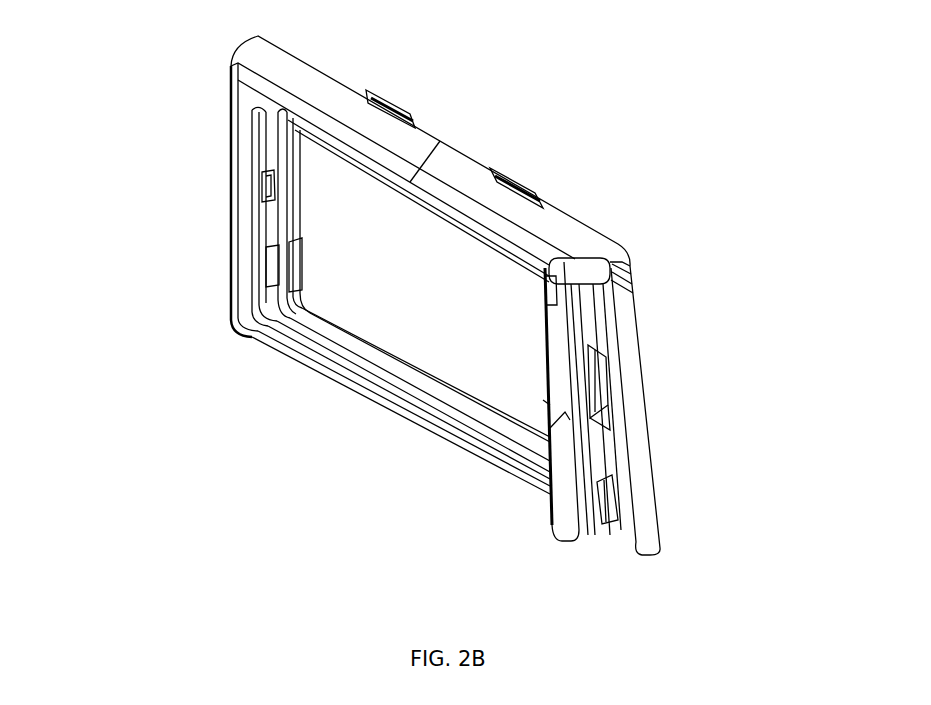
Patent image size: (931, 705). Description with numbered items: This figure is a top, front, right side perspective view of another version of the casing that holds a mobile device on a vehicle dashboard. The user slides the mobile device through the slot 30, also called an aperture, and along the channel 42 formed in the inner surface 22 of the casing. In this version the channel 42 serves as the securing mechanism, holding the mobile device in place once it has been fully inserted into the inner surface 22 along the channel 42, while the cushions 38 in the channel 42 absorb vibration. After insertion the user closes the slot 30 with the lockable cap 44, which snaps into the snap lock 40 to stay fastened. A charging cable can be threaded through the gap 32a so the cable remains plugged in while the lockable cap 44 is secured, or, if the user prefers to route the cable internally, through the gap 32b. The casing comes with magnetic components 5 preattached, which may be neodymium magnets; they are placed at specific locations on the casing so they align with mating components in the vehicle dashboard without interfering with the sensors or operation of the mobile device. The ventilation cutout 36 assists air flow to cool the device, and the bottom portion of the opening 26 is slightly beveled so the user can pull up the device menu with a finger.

The ventilation cutout 36 is at (343, 90).
The magnetic components 5 is at (390, 101).
The cushions 38 is at (270, 185).
The opening 26 is at (343, 272).
The inner surface 22 is at (361, 350).
The channel 42 is at (320, 355).
The lockable cap 44 is at (560, 353).
The snap lock 40 is at (616, 330).
The gap 32b is at (605, 382).
The slot 30 is at (602, 480).
The gap 32a is at (565, 418).